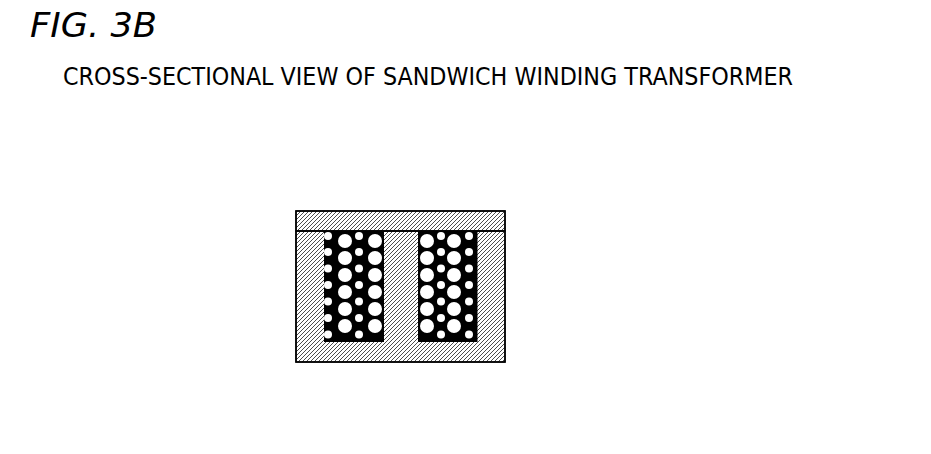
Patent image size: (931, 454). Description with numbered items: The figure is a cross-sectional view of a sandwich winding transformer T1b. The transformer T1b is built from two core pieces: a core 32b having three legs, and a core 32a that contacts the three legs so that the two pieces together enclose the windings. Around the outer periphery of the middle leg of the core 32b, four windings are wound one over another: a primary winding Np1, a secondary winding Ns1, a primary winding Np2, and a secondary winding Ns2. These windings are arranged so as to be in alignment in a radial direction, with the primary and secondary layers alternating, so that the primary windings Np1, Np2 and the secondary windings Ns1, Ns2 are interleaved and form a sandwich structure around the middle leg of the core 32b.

The sandwich winding transformer T1b is at (466, 278).
The core 32a is at (505, 219).
The core 32b is at (505, 302).
The primary winding Np1 is at (425, 231).
The secondary winding Ns1 is at (457, 231).
The primary winding Np2 is at (455, 338).
The secondary winding Ns2 is at (470, 343).